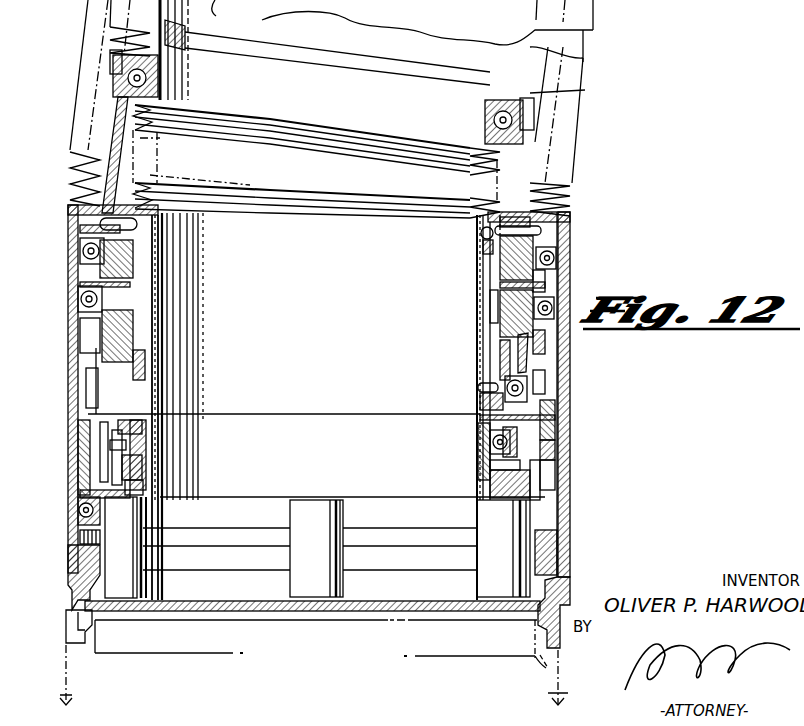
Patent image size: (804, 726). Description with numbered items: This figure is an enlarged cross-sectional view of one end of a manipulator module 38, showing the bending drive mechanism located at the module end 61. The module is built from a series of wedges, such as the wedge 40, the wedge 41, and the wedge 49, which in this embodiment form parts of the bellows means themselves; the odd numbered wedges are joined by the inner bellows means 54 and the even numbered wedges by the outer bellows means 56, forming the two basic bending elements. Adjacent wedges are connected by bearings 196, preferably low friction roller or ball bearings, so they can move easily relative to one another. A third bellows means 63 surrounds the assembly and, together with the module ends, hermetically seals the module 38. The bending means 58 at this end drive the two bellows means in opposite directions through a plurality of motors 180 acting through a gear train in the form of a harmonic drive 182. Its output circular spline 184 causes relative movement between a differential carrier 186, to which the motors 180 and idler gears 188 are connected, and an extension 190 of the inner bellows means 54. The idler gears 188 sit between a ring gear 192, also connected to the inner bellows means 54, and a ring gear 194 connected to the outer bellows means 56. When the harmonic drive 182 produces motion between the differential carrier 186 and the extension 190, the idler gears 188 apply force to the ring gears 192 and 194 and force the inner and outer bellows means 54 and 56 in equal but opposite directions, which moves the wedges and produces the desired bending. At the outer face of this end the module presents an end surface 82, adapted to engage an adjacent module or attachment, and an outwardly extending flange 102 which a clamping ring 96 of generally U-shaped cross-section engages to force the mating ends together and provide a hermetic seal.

The manipulator module 38 is at (70, 244).
The wedge 40 is at (110, 120).
The wedge 41 is at (183, 22).
The wedge 49 is at (233, 11).
The bellows means 54 is at (478, 178).
The bellows means 56 is at (585, 90).
The bending means 58 is at (594, 402).
The module end 61 is at (570, 575).
The third bellows means 63 is at (583, 64).
The end surface 82 is at (353, 612).
The clamping ring 96 is at (72, 632).
The flange 102 is at (74, 590).
The motor 180 is at (270, 531).
The harmonic drive 182 is at (565, 476).
The output circular spline 184 is at (556, 458).
The differential carrier 186 is at (556, 352).
The idler gear 188 is at (92, 270).
The extension 190 is at (480, 404).
The ring gear 192 is at (485, 362).
The ring gear 194 is at (485, 243).
The bearing 196 is at (108, 64).